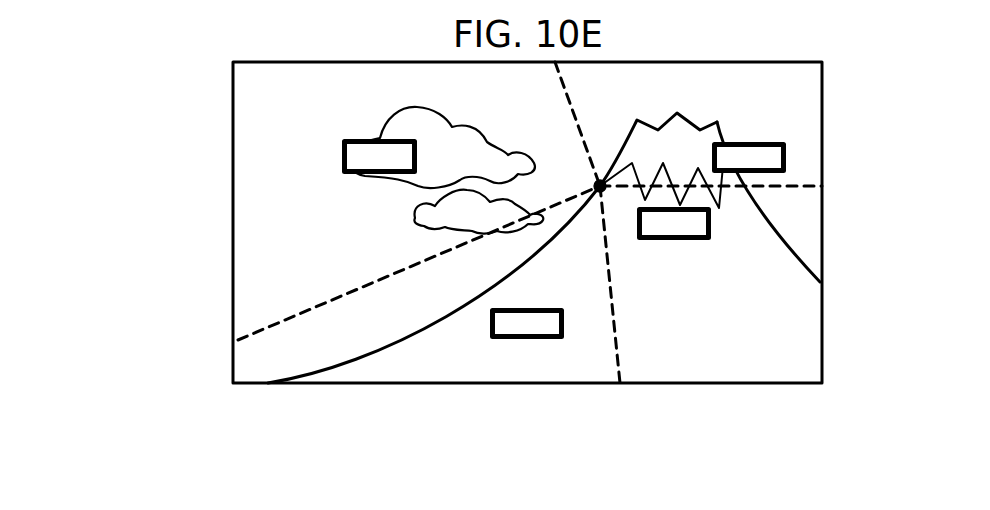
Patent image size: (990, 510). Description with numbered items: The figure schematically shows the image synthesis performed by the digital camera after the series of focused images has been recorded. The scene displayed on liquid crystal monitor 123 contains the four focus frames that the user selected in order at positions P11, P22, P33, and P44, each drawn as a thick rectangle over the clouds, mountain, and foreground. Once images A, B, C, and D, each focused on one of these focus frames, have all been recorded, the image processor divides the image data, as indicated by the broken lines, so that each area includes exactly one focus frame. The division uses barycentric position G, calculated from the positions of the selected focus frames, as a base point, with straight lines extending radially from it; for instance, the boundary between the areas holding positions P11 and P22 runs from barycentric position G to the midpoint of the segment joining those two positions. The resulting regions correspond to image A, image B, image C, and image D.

The liquid crystal monitor 123 is at (398, 384).
The image A is at (313, 277).
The image B is at (580, 355).
The image C is at (788, 318).
The image D is at (797, 92).
The barycentric position G is at (588, 184).